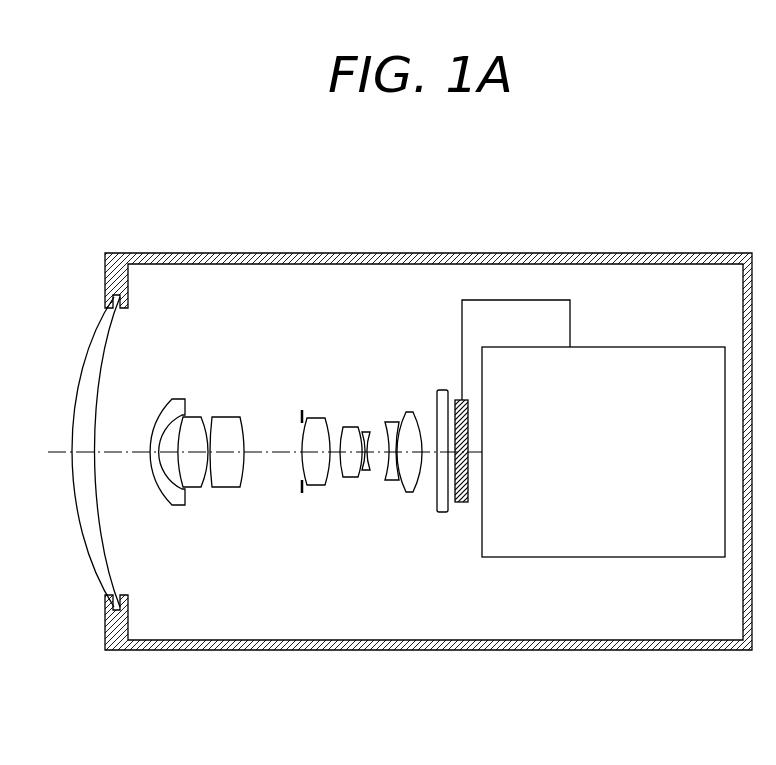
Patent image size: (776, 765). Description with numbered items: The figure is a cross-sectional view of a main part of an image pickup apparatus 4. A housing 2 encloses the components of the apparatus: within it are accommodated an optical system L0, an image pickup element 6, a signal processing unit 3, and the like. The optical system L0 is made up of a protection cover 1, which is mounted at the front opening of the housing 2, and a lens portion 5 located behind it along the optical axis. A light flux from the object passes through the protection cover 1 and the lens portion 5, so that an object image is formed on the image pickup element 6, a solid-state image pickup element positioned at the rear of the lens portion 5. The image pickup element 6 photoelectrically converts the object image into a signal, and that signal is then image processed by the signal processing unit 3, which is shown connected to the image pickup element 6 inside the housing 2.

The protection cover 1 is at (109, 321).
The housing 2 is at (490, 253).
The signal processing unit 3 is at (625, 357).
The image pickup apparatus 4 is at (275, 202).
The lens portion 5 is at (453, 550).
The image pickup element 6 is at (460, 503).
The optical system L0 is at (427, 335).